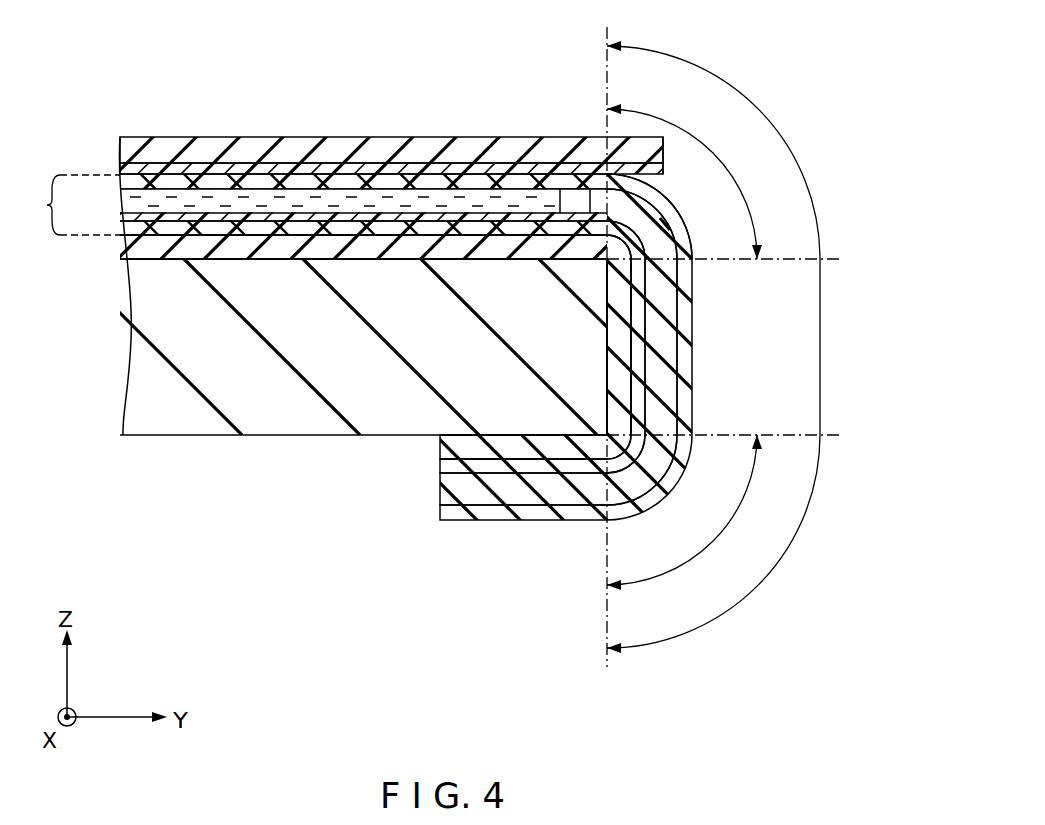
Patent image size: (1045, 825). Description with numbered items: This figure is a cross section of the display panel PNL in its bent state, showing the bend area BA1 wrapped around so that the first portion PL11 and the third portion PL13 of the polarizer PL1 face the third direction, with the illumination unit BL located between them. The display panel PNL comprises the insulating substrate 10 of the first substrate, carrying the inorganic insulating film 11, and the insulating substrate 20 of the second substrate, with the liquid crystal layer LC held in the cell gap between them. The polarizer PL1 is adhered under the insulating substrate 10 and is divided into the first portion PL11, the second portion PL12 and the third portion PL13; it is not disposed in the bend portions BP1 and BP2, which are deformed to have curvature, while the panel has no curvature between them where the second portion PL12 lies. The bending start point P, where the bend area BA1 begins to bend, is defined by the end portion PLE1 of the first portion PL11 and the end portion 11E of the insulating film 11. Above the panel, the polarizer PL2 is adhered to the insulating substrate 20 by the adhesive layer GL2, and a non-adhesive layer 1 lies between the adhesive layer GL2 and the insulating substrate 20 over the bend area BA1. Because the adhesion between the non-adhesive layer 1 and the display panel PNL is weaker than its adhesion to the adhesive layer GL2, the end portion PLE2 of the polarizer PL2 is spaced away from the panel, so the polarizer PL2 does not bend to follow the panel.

The polarizer PL2 is at (250, 147).
The adhesive layer GL2 is at (126, 170).
The insulating substrate 20 is at (133, 180).
The display panel PNL is at (522, 350).
The liquid crystal layer LC is at (140, 199).
The insulating film 11 is at (138, 217).
The insulating substrate 10 is at (124, 228).
The polarizer PL1 is at (122, 246).
The first portion PL11 is at (402, 259).
The second portion PL12 is at (607, 342).
The third portion PL13 is at (503, 442).
The illumination unit BL is at (147, 376).
The bending start point P is at (605, 335).
The end portion PLE2 is at (665, 153).
The bend portion BP1 is at (688, 181).
The non-adhesive layer 1 is at (652, 180).
The end portion 11E is at (668, 227).
The end portion PLE1 is at (612, 248).
The bend area BA1 is at (737, 347).
The bend portion BP2 is at (684, 512).